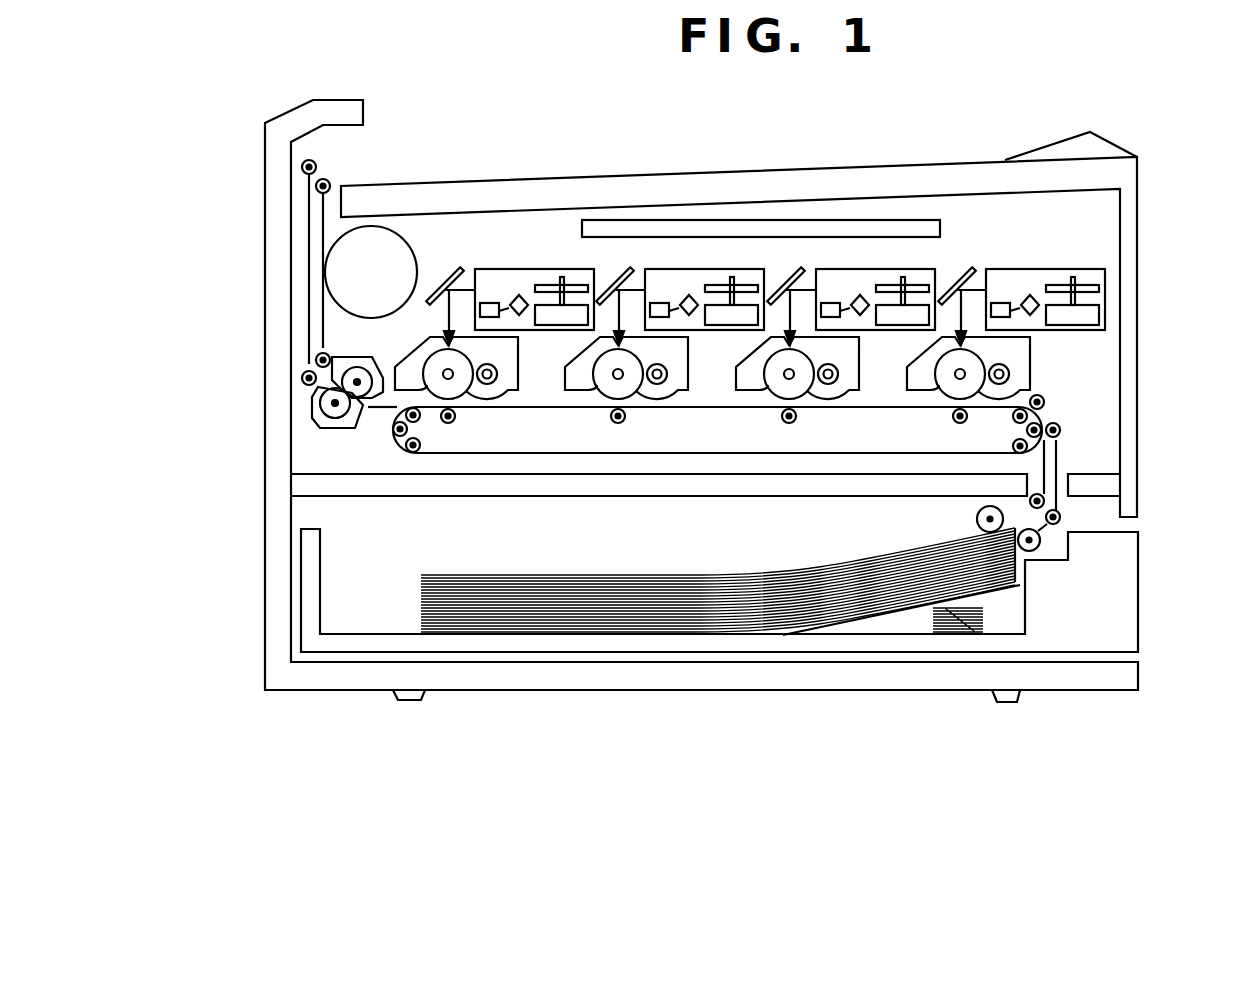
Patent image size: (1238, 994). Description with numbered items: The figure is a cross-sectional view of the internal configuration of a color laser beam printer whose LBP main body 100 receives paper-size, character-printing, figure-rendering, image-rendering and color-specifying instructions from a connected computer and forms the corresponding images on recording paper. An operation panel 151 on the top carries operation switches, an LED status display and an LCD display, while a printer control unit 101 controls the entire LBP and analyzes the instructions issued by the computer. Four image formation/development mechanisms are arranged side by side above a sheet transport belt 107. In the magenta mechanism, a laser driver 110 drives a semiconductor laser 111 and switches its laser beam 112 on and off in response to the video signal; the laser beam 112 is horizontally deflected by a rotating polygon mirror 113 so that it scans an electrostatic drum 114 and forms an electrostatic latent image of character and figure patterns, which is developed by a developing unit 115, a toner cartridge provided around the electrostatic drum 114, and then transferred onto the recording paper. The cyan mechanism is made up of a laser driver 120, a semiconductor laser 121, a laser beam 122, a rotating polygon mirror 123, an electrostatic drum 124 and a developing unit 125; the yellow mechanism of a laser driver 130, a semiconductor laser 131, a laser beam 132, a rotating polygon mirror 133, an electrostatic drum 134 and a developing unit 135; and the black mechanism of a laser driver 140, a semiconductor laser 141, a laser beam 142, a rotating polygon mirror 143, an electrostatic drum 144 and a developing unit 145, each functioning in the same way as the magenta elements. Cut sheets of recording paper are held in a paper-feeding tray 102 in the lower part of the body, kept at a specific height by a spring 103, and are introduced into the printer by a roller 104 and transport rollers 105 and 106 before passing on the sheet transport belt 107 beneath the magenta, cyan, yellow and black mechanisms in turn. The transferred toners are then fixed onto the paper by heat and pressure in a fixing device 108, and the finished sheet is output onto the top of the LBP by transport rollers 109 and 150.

The LBP main body 100 is at (1137, 235).
The printer control unit 101 is at (940, 228).
The paper-feeding tray 102 is at (1125, 565).
The spring 103 is at (983, 618).
The roller 104 is at (977, 519).
The transport roller 105 is at (1060, 517).
The transport roller 106 is at (1060, 430).
The sheet transport belt 107 is at (823, 408).
The fixing device 108 is at (312, 410).
The transport roller 109 is at (302, 378).
The laser driver 110 is at (995, 303).
The semiconductor laser 111 is at (1034, 318).
The laser beam 112 is at (1030, 296).
The rotating polygon mirror 113 is at (1052, 285).
The electrostatic drum 114 is at (950, 409).
The developing unit 115 is at (1023, 378).
The laser driver 120 is at (829, 303).
The semiconductor laser 121 is at (865, 318).
The laser beam 122 is at (859, 296).
The rotating polygon mirror 123 is at (888, 285).
The electrostatic drum 124 is at (779, 408).
The developing unit 125 is at (851, 366).
The laser driver 130 is at (658, 303).
The semiconductor laser 131 is at (694, 318).
The laser beam 132 is at (688, 296).
The rotating polygon mirror 133 is at (717, 285).
The electrostatic drum 134 is at (606, 408).
The developing unit 135 is at (680, 366).
The laser driver 140 is at (488, 303).
The semiconductor laser 141 is at (517, 322).
The laser beam 142 is at (517, 295).
The rotating polygon mirror 143 is at (540, 285).
The electrostatic drum 144 is at (435, 372).
The developing unit 145 is at (510, 366).
The transport roller 150 is at (332, 180).
The operation panel 151 is at (1110, 141).